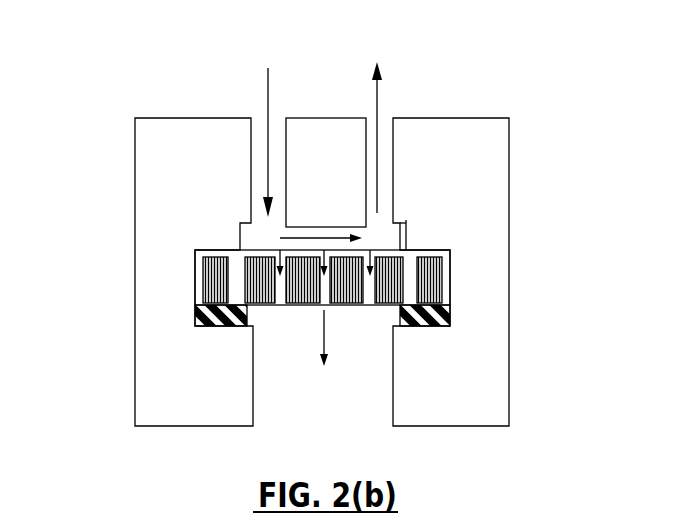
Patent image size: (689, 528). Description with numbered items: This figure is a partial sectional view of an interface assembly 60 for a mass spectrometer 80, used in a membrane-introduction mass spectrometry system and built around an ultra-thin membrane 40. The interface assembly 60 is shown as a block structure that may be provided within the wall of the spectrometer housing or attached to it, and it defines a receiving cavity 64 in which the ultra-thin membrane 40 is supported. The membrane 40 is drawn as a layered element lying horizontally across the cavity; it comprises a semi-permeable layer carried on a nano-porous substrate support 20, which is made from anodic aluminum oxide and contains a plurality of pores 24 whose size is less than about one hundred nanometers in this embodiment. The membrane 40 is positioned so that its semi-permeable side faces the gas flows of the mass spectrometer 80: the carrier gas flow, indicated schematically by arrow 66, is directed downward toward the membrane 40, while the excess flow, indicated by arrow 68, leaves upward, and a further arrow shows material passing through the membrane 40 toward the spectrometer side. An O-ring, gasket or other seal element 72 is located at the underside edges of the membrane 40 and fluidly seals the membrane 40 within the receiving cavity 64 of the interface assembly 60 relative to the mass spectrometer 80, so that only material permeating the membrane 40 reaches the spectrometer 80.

The interface assembly 60 is at (103, 114).
The mass spectrometer 80 is at (496, 410).
The receiving cavity 64 is at (402, 226).
The carrier gas flow 66 is at (262, 207).
The excess flow 68 is at (377, 97).
The ultra-thin membrane 40 is at (272, 296).
The nano-porous substrate support 20 is at (348, 305).
The pores 24 is at (322, 305).
The seal element 72 is at (195, 312).